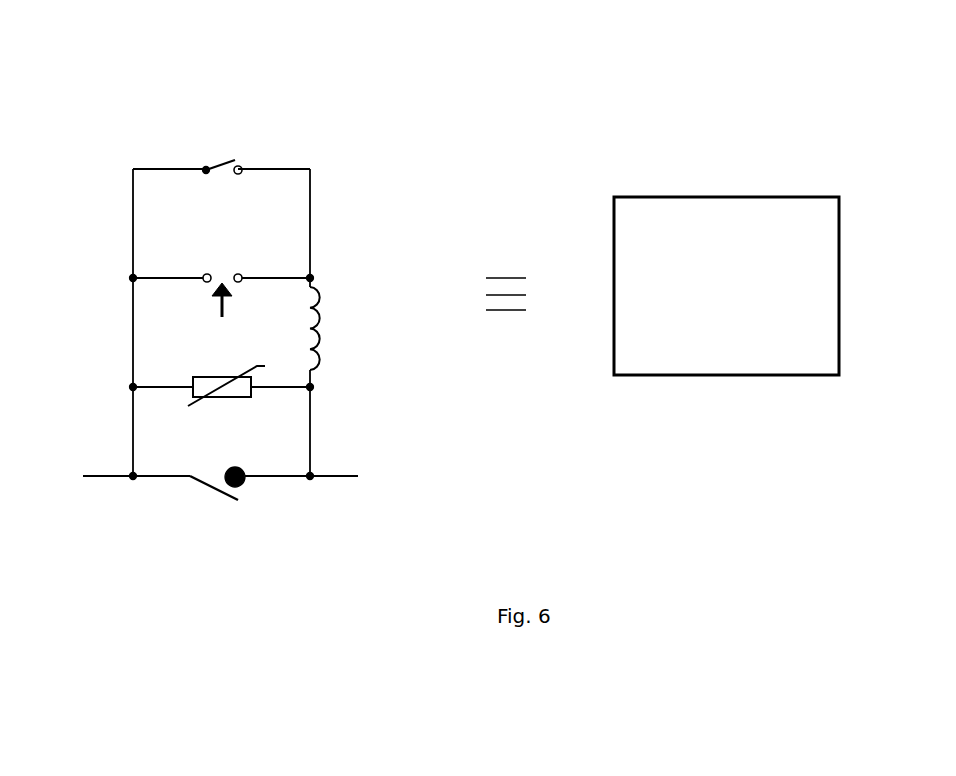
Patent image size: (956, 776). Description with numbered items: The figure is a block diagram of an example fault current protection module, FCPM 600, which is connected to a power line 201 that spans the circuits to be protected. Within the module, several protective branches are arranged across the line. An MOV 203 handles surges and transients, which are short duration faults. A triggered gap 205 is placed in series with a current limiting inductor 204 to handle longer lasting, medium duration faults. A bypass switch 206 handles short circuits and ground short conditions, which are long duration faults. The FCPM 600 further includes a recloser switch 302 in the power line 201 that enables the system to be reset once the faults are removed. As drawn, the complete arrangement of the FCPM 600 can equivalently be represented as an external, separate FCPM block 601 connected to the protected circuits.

The fault current protection module 600 is at (327, 120).
The FCPM block 601 is at (728, 197).
The power line 201 is at (103, 476).
The recloser switch 302 is at (245, 498).
The MOV 203 is at (237, 408).
The current limiting inductor 204 is at (335, 328).
The triggered gap 205 is at (203, 296).
The bypass switch 206 is at (222, 185).